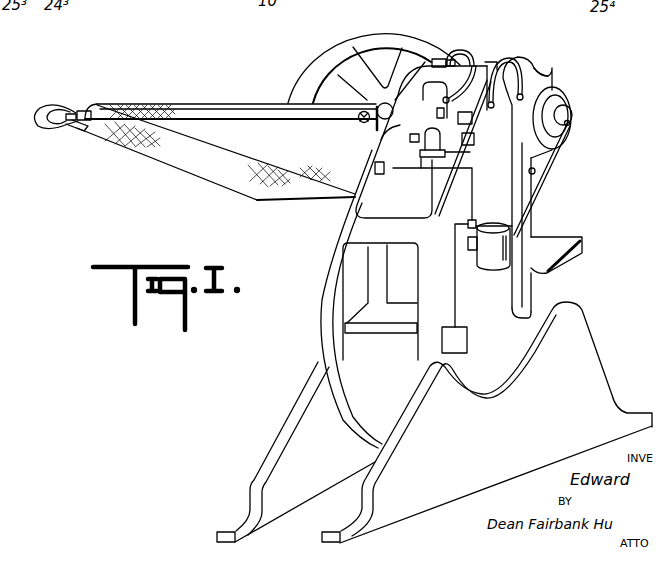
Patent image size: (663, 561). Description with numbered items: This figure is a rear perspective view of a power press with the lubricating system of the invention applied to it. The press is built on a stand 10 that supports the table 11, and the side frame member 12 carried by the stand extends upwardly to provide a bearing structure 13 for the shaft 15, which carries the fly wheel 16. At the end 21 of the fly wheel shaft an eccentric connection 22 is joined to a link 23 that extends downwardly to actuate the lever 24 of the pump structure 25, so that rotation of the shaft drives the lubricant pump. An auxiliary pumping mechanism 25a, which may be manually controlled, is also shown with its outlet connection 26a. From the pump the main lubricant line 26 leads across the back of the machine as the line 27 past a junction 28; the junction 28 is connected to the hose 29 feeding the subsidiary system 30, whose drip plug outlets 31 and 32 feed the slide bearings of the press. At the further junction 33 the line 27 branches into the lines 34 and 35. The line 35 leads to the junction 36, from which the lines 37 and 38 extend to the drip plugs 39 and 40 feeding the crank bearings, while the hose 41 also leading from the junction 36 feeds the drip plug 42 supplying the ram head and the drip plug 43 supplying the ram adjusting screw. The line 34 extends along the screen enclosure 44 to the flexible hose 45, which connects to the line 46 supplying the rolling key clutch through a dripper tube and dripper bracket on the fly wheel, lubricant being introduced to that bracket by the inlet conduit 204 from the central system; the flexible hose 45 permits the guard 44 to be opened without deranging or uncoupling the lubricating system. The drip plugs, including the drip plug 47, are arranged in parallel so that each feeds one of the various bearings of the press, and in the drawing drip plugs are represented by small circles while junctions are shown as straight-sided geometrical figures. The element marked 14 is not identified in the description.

The stand 10 is at (264, 436).
The table 11 is at (578, 262).
The side frame member 12 is at (322, 296).
The bearing structure 13 is at (549, 74).
The pin 14 is at (376, 124).
The shaft 15 is at (372, 103).
The fly wheel 16 is at (340, 38).
The end of fly wheel shaft 21 is at (574, 112).
The eccentric connection 22 is at (570, 124).
The link 23 is at (548, 178).
The lever 24 is at (513, 238).
The pump structure 25 is at (483, 262).
The auxiliary pumping mechanism 25a is at (468, 346).
The main lubricant line 26 is at (472, 193).
The outlet connection 26a is at (457, 310).
The lubricant line 27 is at (400, 172).
The junction 28 is at (423, 172).
The hose 29 is at (468, 120).
The subsidiary system 30 is at (465, 156).
The drip plug outlet 31 is at (470, 143).
The drip plug outlet 32 is at (419, 145).
The further junction 33 is at (374, 171).
The line 34 is at (213, 186).
The line 35 is at (398, 137).
The junction 36 is at (452, 60).
The line 37 is at (439, 59).
The line 38 is at (497, 62).
The drip plug 39 is at (413, 92).
The drip plug 40 is at (514, 57).
The hose 41 is at (468, 58).
The drip plug 42 is at (459, 86).
The drip plug 43 is at (437, 113).
The screen enclosure 44 is at (176, 150).
The flexible hose 45 is at (46, 130).
The line 46 is at (213, 104).
The drip plug 47 is at (95, 104).
The inlet conduit 204 is at (358, 121).